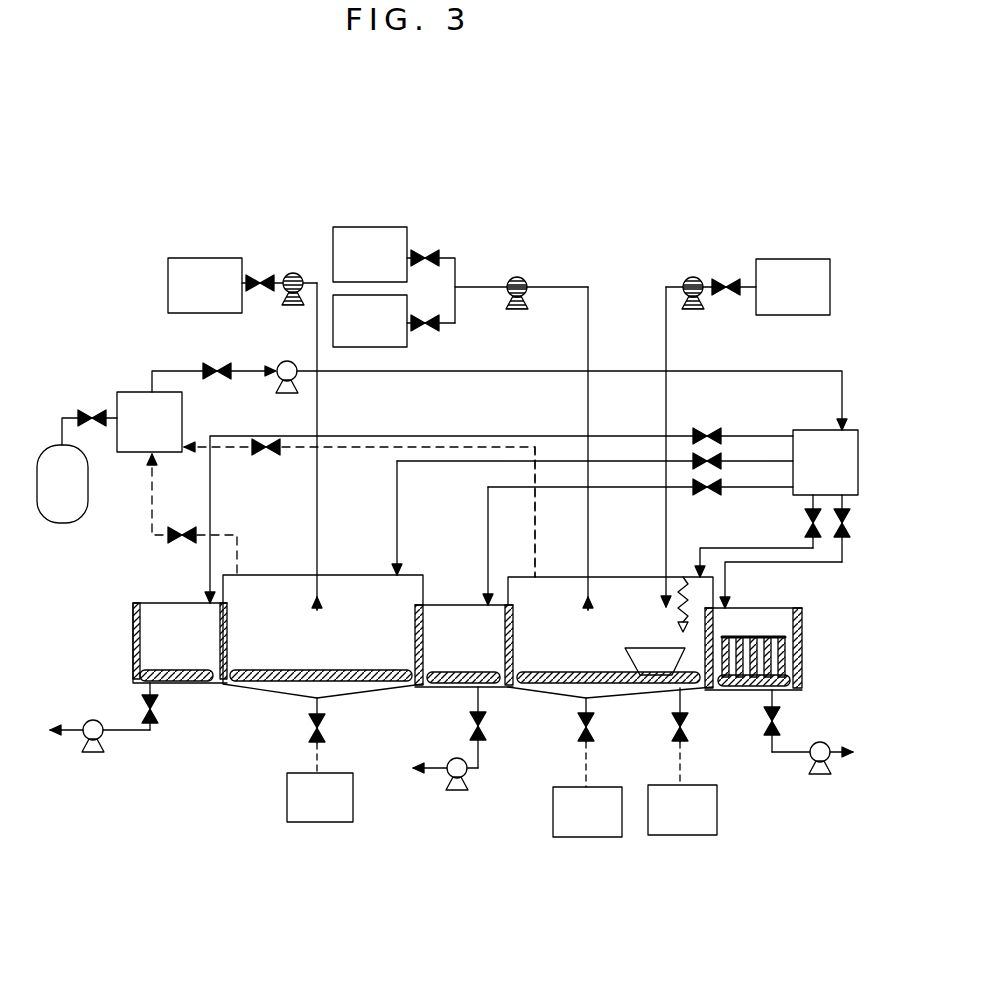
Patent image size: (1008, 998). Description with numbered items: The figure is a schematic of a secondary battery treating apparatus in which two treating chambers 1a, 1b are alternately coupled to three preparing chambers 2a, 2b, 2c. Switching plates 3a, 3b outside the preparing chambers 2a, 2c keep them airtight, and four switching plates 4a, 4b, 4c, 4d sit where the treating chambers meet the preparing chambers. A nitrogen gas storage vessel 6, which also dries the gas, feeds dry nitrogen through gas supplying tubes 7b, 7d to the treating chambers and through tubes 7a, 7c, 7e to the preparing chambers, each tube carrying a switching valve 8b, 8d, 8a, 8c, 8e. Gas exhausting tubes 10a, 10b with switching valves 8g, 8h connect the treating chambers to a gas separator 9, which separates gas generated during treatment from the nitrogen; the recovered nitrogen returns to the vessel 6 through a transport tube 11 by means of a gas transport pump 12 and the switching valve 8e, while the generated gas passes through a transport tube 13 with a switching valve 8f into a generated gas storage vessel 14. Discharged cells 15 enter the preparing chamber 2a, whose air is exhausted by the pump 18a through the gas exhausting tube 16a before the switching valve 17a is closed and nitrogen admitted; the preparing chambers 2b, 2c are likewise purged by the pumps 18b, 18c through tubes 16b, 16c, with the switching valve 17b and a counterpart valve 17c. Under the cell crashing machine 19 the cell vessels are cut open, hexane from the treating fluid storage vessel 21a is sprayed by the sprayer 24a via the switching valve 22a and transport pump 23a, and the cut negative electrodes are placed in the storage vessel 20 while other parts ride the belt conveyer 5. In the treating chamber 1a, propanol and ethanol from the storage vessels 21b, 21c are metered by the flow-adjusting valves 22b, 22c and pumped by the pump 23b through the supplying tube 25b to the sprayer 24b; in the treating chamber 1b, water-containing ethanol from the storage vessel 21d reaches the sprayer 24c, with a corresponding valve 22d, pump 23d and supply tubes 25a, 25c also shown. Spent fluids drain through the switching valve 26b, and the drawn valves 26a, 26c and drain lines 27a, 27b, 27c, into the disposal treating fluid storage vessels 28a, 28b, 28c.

The treating chamber 1a is at (514, 572).
The treating chamber 1b is at (362, 575).
The preparing chamber 2a is at (802, 616).
The preparing chamber 2b is at (438, 600).
The preparing chamber 2c is at (152, 604).
The switching plate 3a is at (803, 648).
The switching plate 3b is at (133, 607).
The switching plate 4a is at (712, 634).
The switching plate 4b is at (504, 635).
The switching plate 4c is at (414, 622).
The switching plate 4d is at (229, 623).
The belt conveyer 5 is at (192, 686).
The nitrogen gas storage vessel 6 is at (825, 462).
The gas supplying tube 7a is at (760, 562).
The gas supplying tube 7b is at (708, 548).
The gas supplying tube 7c is at (612, 474).
The gas supplying tube 7d is at (520, 454).
The gas supplying tube 7e is at (460, 440).
The switching valve 8a is at (844, 521).
The switching valve 8b is at (824, 534).
The switching valve 8c is at (722, 488).
The switching valve 8d is at (722, 460).
The switching valve 8e is at (211, 372).
The switching valve 8f is at (86, 406).
The switching valve 8g is at (272, 452).
The switching valve 8h is at (176, 534).
The gas separator 9 is at (149, 422).
The gas exhausting tube 10a is at (228, 450).
The gas exhausting tube 10b is at (151, 490).
The transport tube 11 is at (396, 372).
The gas transport pump 12 is at (278, 375).
The transport tube 13 is at (40, 434).
The generated gas storage vessel 14 is at (62, 484).
The cells 15 is at (785, 656).
The gas exhausting tube 16a is at (794, 756).
The gas exhausting tube 16b is at (479, 744).
The gas exhausting tube 16c is at (107, 723).
The switching valve 17a is at (777, 712).
The switching valve 17b is at (478, 714).
The discharge valve 17c is at (159, 715).
The pump 18a is at (826, 775).
The pump 18b is at (455, 790).
The pump 18c is at (95, 756).
The cell crashing machine 19 is at (675, 620).
The storage vessel 20 is at (655, 664).
The treating fluid storage vessel 21a is at (793, 287).
The treating fluid storage vessel 21b is at (370, 254).
The treating fluid storage vessel 21c is at (370, 321).
The treating fluid storage vessel 21d is at (205, 285).
The switching valve 22a is at (725, 280).
The switching valve 22b is at (431, 248).
The switching valve 22c is at (438, 328).
The valve 22d is at (260, 272).
The treating fluid transport pump 23a is at (691, 275).
The pump 23b is at (520, 280).
The metering pump 23d is at (291, 300).
The sprayer 24a is at (652, 582).
The sprayer 24b is at (590, 613).
The sprayer 24c is at (319, 608).
The pipe 25a is at (675, 365).
The treating fluid supplying tube 25b is at (591, 314).
The chemical supply pipe 25c is at (321, 508).
The drain valve 26a is at (675, 730).
The switching valve 26b is at (586, 733).
The drain valve 26c is at (324, 724).
The drain pipe 27a is at (683, 768).
The drain pipe 27b is at (578, 754).
The drain pipe 27c is at (311, 752).
The disposal treating fluid storage vessel 28a is at (682, 810).
The disposal treating fluid storage vessel 28b is at (587, 812).
The disposal treating fluid storage vessel 28c is at (320, 797).